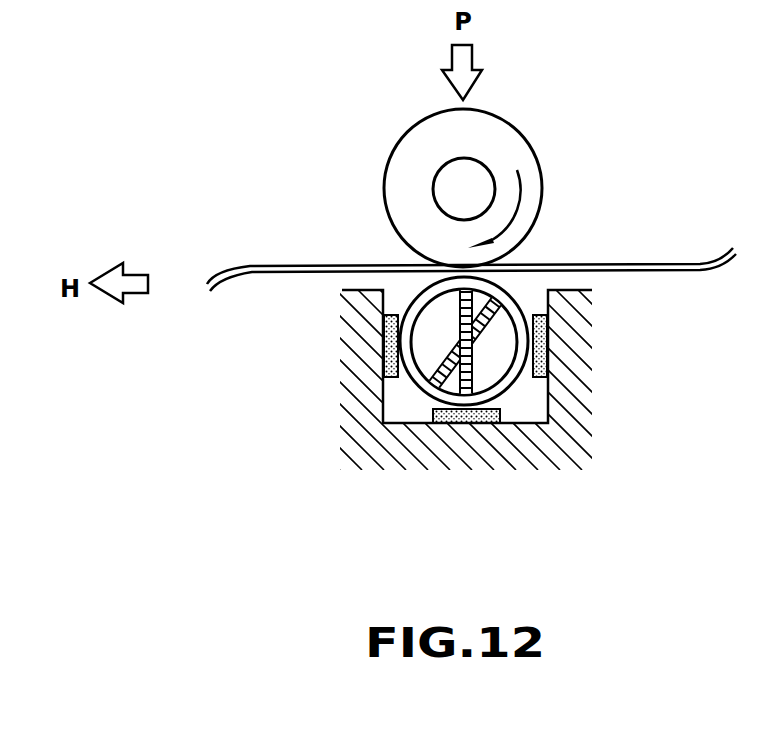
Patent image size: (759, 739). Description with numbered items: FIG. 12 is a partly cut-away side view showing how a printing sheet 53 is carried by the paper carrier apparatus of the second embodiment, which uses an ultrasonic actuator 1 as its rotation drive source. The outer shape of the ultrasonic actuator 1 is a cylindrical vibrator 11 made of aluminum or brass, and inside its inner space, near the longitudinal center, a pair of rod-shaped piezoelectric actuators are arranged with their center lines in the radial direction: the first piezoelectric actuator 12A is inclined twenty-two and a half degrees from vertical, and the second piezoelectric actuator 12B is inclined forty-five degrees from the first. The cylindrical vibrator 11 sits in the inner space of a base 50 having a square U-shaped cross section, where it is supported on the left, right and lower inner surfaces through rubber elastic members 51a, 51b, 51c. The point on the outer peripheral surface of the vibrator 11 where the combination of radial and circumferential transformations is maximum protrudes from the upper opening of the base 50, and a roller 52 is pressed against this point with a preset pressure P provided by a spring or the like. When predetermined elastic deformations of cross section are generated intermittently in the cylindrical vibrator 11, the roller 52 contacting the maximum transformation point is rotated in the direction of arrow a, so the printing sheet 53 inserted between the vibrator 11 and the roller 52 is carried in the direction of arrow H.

The ultrasonic actuator 1 is at (451, 347).
The cylindrical vibrator 11 is at (517, 300).
The first piezoelectric actuator 12A is at (472, 362).
The second piezoelectric actuator 12B is at (447, 360).
The base 50 is at (459, 398).
The elastic member 51a is at (385, 368).
The elastic member 51b is at (548, 337).
The elastic member 51c is at (482, 423).
The roller 52 is at (492, 180).
The printing sheet 53 is at (662, 263).
The arrow a is at (518, 174).